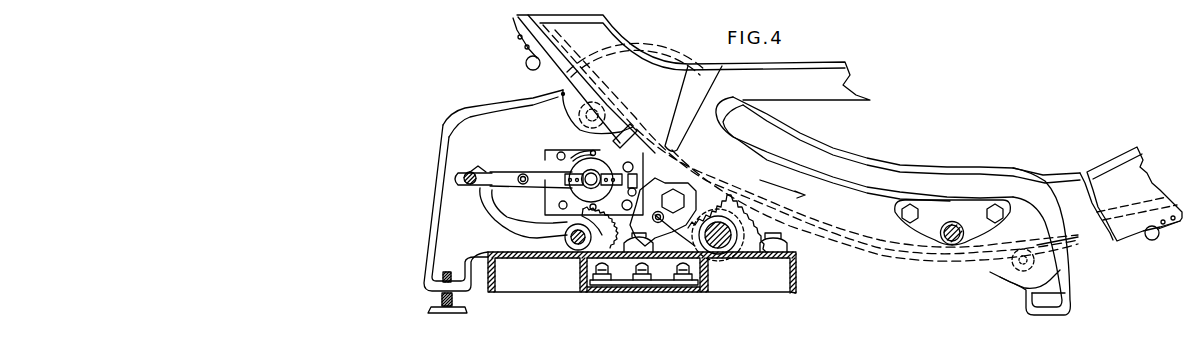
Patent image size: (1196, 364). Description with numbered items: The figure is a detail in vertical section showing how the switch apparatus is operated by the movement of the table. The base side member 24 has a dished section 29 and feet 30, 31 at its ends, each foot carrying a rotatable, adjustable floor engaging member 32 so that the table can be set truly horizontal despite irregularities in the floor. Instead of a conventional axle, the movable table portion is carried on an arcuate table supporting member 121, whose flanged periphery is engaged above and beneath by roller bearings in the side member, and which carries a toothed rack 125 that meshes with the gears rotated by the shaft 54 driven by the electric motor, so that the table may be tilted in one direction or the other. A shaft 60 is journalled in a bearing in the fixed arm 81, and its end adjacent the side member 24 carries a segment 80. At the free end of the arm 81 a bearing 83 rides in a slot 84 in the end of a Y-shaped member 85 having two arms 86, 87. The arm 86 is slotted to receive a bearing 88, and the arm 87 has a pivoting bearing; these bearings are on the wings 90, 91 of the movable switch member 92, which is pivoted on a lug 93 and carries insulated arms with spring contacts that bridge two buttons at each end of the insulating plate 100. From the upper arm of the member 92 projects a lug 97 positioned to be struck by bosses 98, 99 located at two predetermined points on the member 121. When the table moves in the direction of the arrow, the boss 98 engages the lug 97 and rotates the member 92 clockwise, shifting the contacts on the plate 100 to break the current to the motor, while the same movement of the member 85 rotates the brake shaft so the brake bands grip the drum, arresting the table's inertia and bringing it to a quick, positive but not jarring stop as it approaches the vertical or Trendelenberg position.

The base side member 24 is at (977, 164).
The dished section 29 is at (468, 127).
The foot 30 is at (422, 284).
The foot 31 is at (1072, 312).
The floor engaging member 32 is at (430, 312).
The shaft 54 is at (716, 244).
The shaft 60 is at (592, 208).
The segment 80 is at (597, 238).
The fixed arm 81 is at (480, 218).
The bearing 83 is at (481, 171).
The slot 84 is at (452, 178).
The Y-shaped member 85 is at (510, 177).
The arm 86 is at (590, 150).
The arm 87 is at (580, 205).
The bearing 88 is at (597, 139).
The wing 90 is at (601, 166).
The wing 91 is at (601, 204).
The movable switch member 92 is at (598, 188).
The lug 93 is at (582, 174).
The lug 97 is at (615, 142).
The boss 98 is at (526, 63).
The boss 99 is at (1154, 241).
The insulating plate 100 is at (650, 170).
The arcuate table supporting member 121 is at (955, 266).
The rack 125 is at (758, 228).